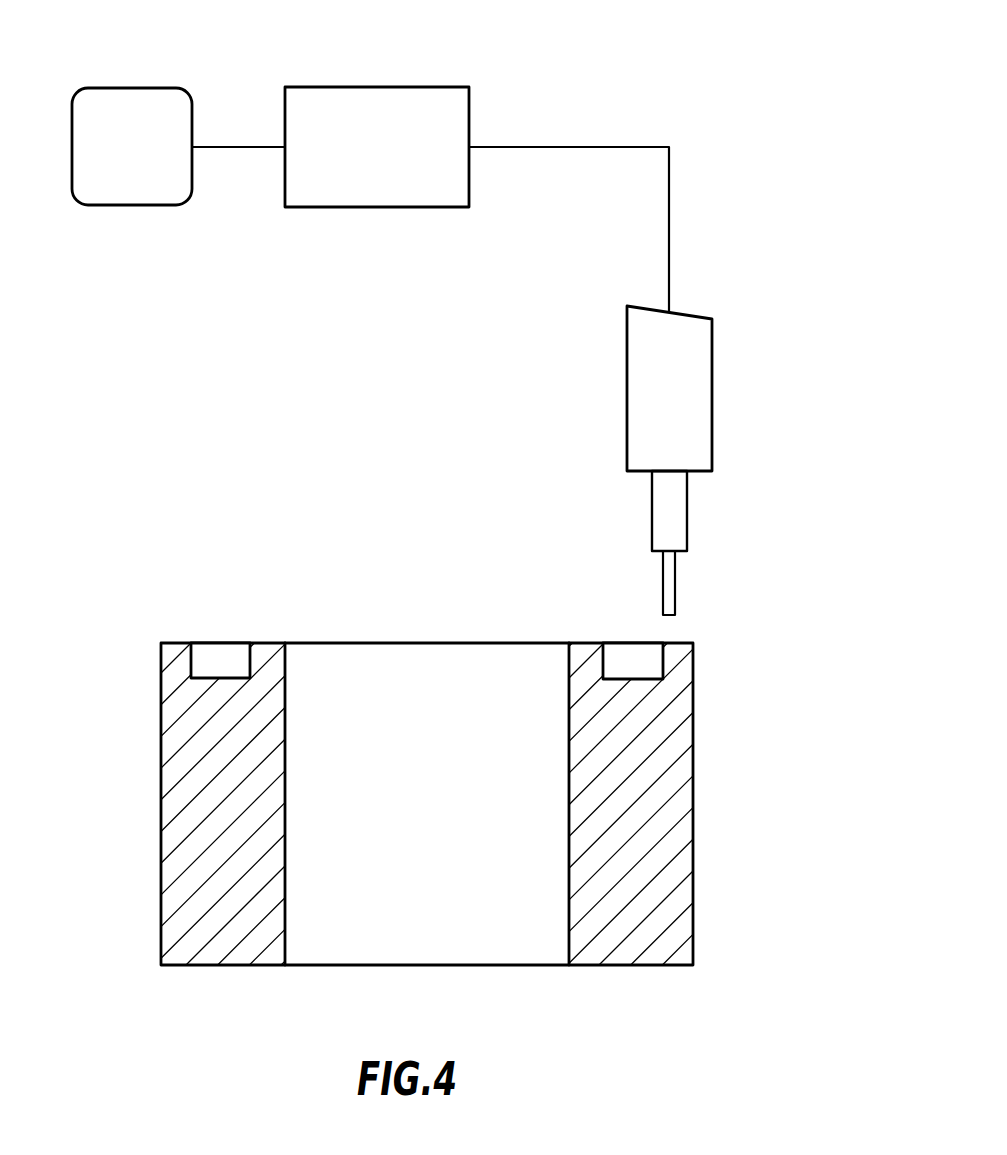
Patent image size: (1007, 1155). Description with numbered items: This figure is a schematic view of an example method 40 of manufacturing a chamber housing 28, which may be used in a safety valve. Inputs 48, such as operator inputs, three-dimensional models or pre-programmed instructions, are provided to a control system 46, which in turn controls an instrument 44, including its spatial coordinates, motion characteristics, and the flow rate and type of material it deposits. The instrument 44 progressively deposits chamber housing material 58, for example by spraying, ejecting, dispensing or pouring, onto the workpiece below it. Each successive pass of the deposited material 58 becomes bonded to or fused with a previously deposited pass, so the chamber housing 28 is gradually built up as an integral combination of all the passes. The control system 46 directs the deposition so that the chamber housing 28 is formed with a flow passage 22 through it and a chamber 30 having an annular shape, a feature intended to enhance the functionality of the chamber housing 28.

The method 40 is at (782, 117).
The inputs 48 is at (103, 87).
The control system 46 is at (358, 87).
The instrument 44 is at (712, 386).
The chamber housing 28 is at (694, 777).
The chamber housing material 58 is at (193, 817).
The flow passage 22 is at (427, 861).
The chamber 30 is at (222, 660).